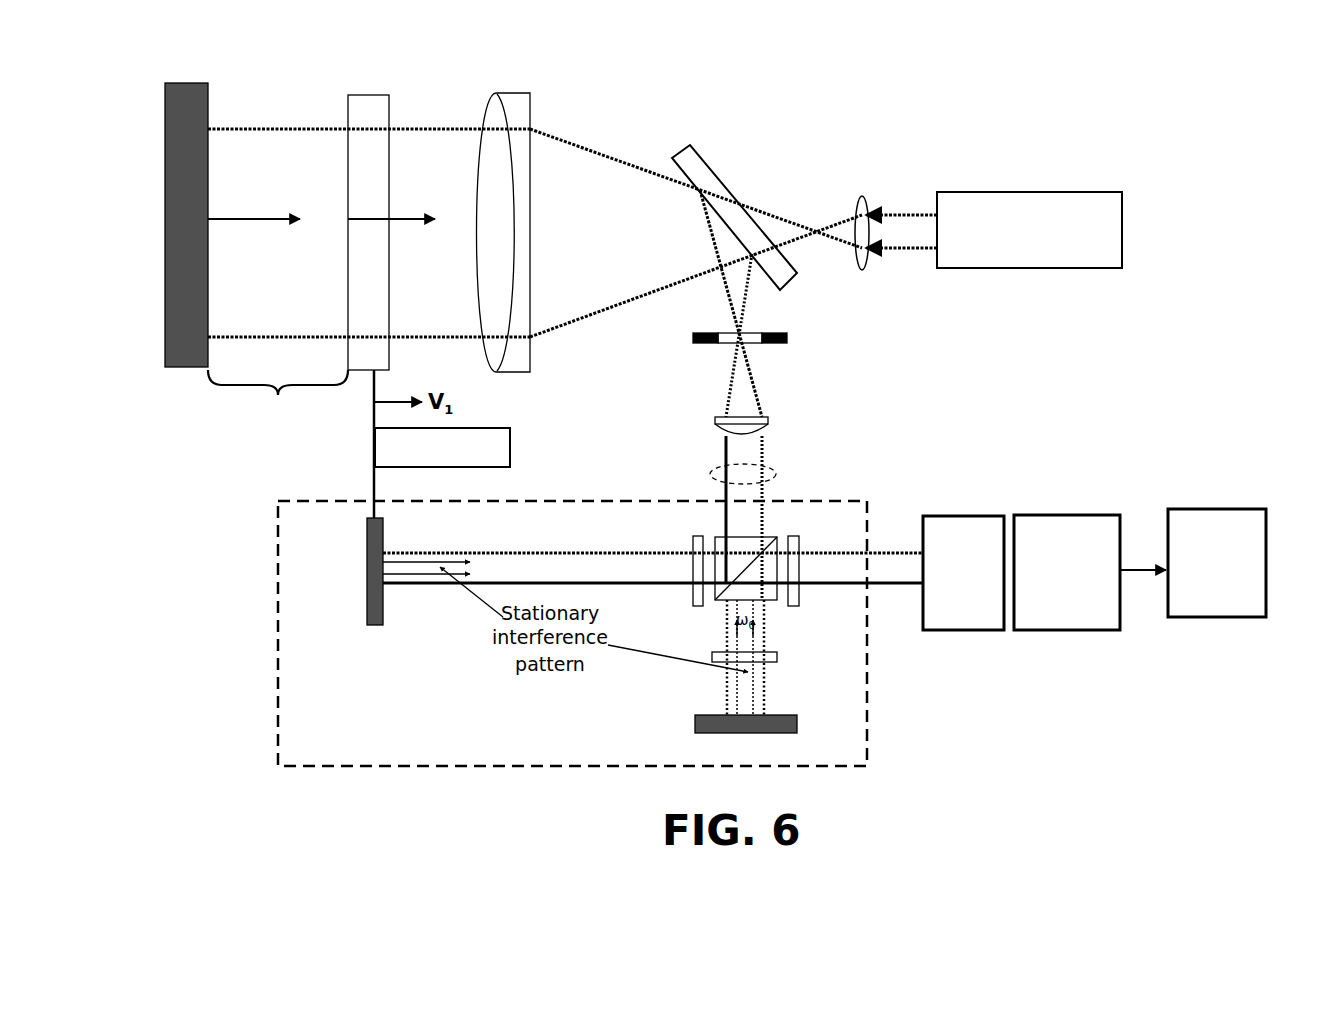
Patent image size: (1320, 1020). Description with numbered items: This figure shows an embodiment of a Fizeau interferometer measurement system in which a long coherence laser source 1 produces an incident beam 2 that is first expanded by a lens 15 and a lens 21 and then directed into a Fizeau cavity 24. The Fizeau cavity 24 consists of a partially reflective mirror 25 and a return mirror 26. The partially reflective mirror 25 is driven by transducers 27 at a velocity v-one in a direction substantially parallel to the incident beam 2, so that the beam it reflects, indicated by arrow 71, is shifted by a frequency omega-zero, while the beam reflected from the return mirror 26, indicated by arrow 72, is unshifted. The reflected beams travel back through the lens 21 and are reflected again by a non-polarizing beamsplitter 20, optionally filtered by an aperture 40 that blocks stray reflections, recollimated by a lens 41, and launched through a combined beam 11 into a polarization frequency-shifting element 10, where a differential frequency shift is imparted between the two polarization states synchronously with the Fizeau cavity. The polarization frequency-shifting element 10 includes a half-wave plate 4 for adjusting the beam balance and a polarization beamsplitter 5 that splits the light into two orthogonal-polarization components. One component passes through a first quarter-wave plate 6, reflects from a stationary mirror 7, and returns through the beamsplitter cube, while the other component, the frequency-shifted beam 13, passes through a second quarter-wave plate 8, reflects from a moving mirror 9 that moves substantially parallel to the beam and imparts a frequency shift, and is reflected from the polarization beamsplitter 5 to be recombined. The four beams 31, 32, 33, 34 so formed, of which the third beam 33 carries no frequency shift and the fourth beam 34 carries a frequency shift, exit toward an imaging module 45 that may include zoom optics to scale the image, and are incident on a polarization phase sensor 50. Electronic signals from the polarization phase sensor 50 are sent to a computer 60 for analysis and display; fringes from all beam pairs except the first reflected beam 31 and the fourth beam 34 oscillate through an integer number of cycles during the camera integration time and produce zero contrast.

The long coherence laser source 1 is at (1020, 268).
The incident beam 2 is at (883, 252).
The half-wave plate 4 is at (797, 550).
The polarization beamsplitter 5 is at (773, 542).
The first quarter-wave plate 6 is at (716, 651).
The stationary mirror 7 is at (695, 717).
The second quarter-wave plate 8 is at (696, 536).
The moving mirror 9 is at (366, 533).
The polarization frequency-shifting element 10 is at (868, 718).
The combined beam 11 is at (712, 472).
The frequency-shifted beam 13 is at (617, 553).
The lens 15 is at (862, 196).
The non-polarizing beamsplitter 20 is at (692, 143).
The lens 21 is at (530, 93).
The Fizeau cavity 24 is at (278, 395).
The partially reflective mirror 25 is at (350, 95).
The return mirror 26 is at (208, 83).
The transducers 27 is at (512, 440).
The first reflected beam 31 is at (754, 690).
The second reflected beam 32 is at (738, 692).
The third beam 33 is at (428, 574).
The fourth beam 34 is at (430, 557).
The aperture 40 is at (787, 338).
The lens 41 is at (712, 418).
The imaging unit 45 is at (936, 632).
The polarization phase sensor 50 is at (1031, 632).
The computer 60 is at (1185, 618).
The frequency arrow 71 is at (398, 221).
The frequency arrow 72 is at (230, 221).